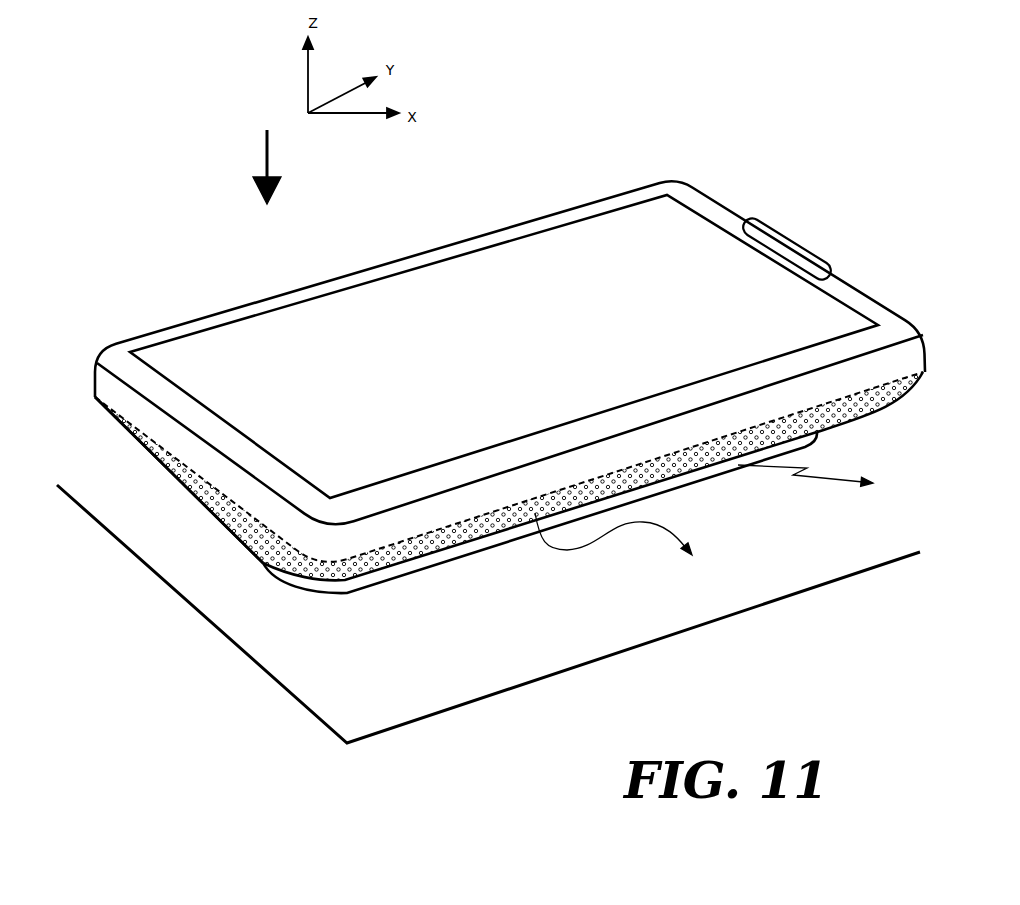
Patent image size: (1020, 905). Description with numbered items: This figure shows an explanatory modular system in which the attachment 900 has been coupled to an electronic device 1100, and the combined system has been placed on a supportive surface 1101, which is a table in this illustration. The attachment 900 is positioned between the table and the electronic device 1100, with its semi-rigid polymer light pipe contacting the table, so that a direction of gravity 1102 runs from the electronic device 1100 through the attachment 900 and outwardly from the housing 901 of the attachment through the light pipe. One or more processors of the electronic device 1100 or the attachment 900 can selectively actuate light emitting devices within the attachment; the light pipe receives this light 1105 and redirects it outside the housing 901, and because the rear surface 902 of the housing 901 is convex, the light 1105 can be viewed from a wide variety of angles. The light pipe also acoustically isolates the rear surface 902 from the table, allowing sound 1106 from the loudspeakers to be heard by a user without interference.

The electronic device 1100 is at (592, 187).
The supportive surface 1101 is at (497, 690).
The direction of gravity 1102 is at (267, 150).
The attachment 900 is at (513, 514).
The housing 901 is at (175, 470).
The rear surface 902 is at (387, 555).
The light 1105 is at (830, 482).
The sound 1106 is at (663, 537).